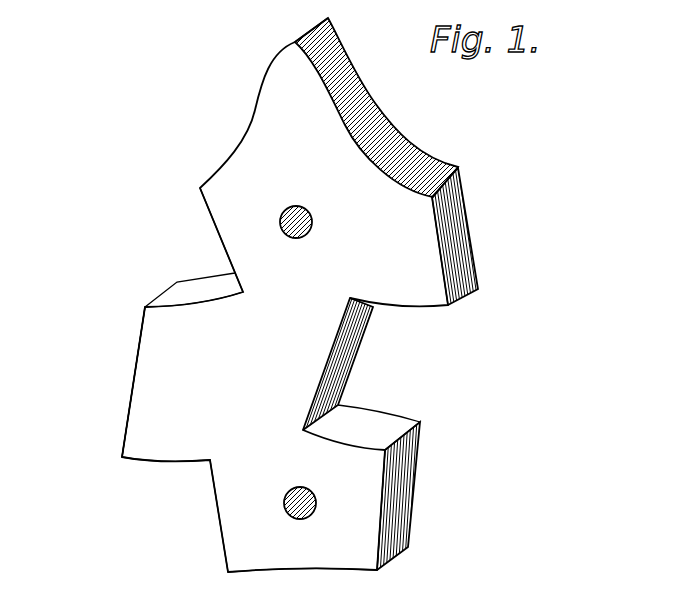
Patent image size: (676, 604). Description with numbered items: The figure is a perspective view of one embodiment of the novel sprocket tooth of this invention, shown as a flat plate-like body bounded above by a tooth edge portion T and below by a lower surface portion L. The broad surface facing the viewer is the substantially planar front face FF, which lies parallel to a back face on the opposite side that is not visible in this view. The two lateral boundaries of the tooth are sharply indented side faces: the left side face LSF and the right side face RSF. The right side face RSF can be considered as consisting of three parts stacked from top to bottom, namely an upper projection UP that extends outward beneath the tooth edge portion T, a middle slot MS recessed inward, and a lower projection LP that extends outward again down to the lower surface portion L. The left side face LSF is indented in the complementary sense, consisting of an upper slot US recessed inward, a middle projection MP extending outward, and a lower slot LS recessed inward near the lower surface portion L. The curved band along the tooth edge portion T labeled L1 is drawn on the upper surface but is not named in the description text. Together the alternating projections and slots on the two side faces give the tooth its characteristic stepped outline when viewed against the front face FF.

The tooth edge portion T is at (313, 25).
The curved upper land surface L1 is at (327, 302).
The upper slot US is at (186, 181).
The upper projection UP is at (467, 155).
The right side face RSF is at (539, 563).
The left side face LSF is at (72, 185).
The middle projection MP is at (132, 311).
The front face FF is at (285, 307).
The middle slot MS is at (481, 286).
The lower slot LS is at (160, 579).
The lower projection LP is at (433, 419).
The lower surface portion L is at (298, 566).